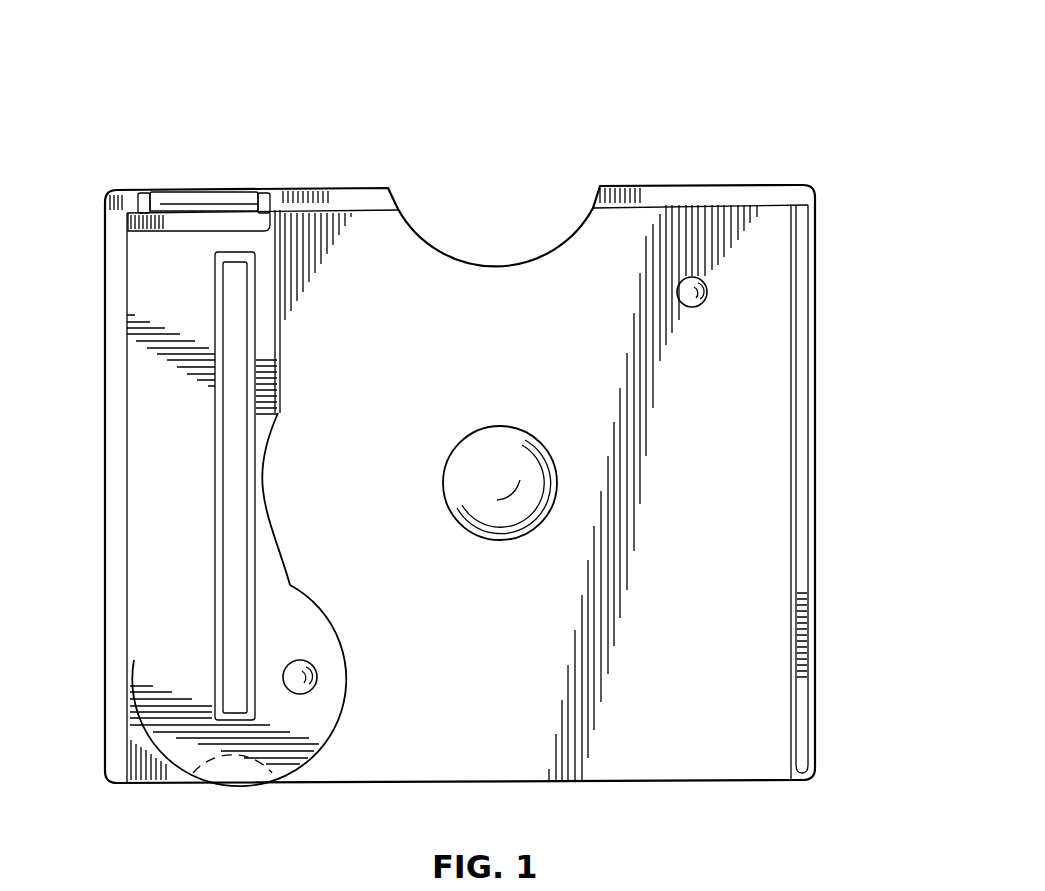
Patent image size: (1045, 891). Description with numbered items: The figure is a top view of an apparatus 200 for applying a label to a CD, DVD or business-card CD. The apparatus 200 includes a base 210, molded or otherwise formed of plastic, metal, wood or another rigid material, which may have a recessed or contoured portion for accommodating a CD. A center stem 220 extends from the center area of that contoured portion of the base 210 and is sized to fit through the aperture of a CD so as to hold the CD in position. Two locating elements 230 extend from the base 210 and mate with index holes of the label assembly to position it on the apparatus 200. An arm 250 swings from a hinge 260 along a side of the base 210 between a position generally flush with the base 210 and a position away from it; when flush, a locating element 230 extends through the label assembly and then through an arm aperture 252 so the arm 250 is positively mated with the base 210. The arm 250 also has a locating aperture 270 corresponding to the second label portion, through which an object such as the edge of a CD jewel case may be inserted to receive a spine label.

The apparatus 200 is at (676, 106).
The base 210 is at (648, 747).
The center stem 220 is at (505, 437).
The locating elements 230 is at (707, 296).
The arm 250 is at (143, 450).
The arm aperture 252 is at (303, 662).
The hinge 260 is at (222, 195).
The locating aperture 270 is at (237, 457).